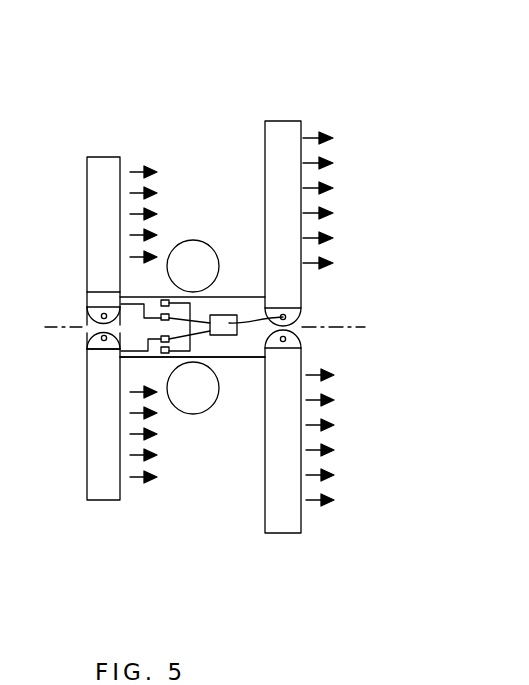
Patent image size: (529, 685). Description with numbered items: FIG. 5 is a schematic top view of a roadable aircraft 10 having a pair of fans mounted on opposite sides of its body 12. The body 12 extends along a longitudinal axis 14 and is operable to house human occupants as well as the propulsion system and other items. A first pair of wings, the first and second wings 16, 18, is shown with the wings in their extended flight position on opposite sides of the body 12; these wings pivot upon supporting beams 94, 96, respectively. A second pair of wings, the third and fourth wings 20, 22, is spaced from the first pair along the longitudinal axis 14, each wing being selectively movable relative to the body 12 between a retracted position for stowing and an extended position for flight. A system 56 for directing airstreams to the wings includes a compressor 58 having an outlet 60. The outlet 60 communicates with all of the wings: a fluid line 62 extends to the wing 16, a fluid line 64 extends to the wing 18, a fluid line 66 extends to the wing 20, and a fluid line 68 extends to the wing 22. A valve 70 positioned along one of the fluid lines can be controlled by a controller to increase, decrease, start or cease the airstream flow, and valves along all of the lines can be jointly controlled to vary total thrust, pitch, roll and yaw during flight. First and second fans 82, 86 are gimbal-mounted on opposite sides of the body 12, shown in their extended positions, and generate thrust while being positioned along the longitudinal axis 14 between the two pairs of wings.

The roadable aircraft 10 is at (306, 90).
The body 12 is at (250, 360).
The longitudinal axis 14 is at (85, 327).
The first wing 16 is at (105, 188).
The second wing 18 is at (102, 462).
The third wing 20 is at (277, 137).
The fourth wing 22 is at (281, 518).
The system 56 is at (229, 198).
The compressor 58 is at (296, 313).
The outlet 60 is at (288, 298).
The fluid line 62 is at (120, 299).
The fluid line 64 is at (127, 358).
The fluid line 66 is at (226, 315).
The fluid line 68 is at (233, 358).
The valve 70 is at (140, 338).
The first fan 82 is at (193, 266).
The second fan 86 is at (193, 388).
The supporting beam 94 is at (101, 315).
The supporting beam 96 is at (101, 338).